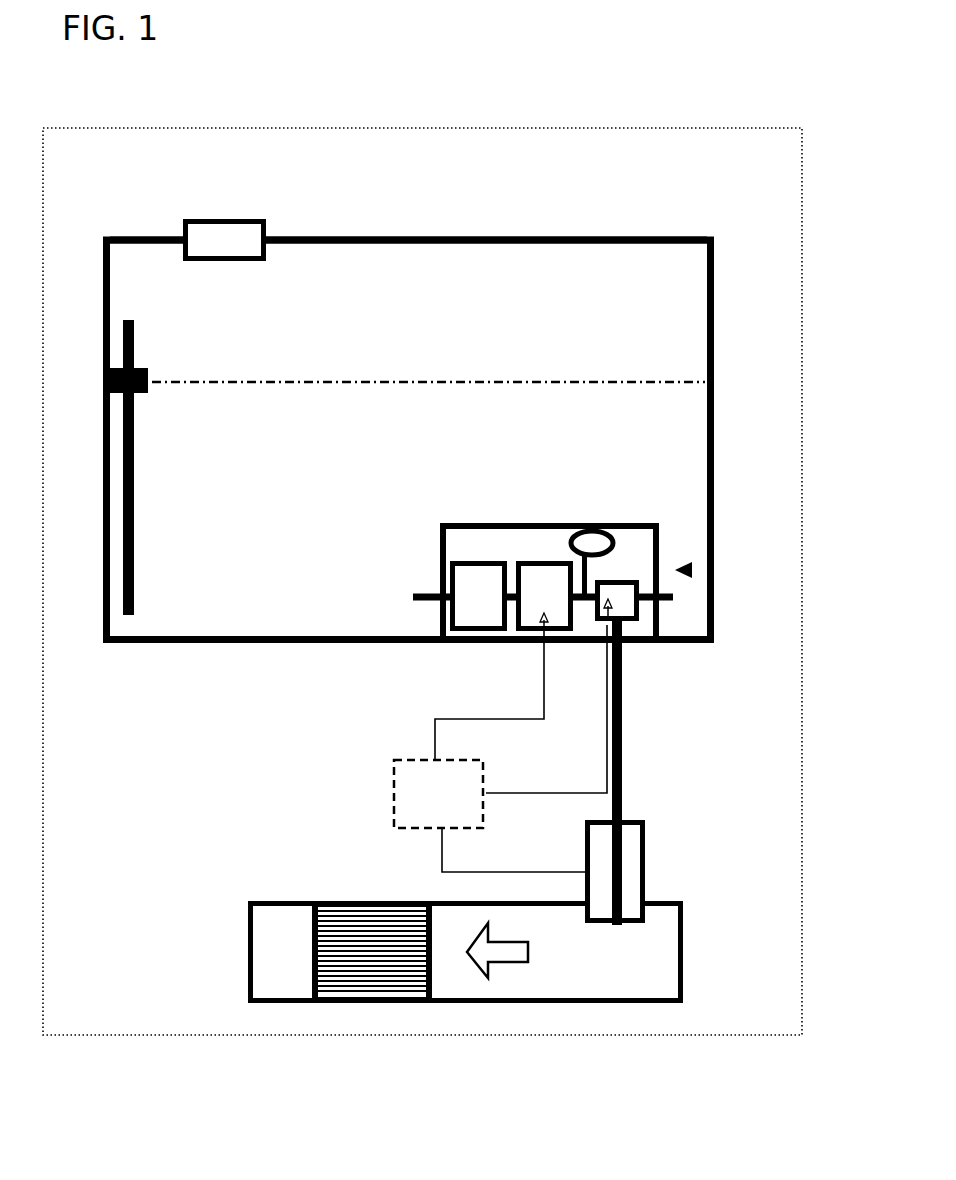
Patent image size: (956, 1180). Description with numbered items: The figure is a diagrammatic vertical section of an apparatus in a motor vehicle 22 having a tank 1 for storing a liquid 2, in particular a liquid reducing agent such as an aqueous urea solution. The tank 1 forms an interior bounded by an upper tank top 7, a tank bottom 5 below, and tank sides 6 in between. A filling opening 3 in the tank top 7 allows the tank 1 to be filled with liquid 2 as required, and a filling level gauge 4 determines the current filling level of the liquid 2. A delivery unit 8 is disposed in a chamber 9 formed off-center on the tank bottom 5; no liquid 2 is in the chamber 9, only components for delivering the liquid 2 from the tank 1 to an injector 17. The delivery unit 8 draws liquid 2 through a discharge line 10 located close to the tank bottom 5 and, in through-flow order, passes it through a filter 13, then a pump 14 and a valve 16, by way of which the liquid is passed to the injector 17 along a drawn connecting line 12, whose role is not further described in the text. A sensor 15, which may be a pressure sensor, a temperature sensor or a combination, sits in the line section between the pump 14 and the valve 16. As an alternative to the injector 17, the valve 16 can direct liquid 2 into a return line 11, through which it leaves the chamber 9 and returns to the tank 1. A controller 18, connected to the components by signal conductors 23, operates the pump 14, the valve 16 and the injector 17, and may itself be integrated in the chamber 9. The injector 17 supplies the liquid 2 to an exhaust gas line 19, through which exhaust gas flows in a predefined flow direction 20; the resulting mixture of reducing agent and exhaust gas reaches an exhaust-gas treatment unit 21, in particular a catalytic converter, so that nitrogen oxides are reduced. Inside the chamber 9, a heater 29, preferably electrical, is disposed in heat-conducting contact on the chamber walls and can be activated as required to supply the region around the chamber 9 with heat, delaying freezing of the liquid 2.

The tank 1 is at (546, 253).
The liquid 2 is at (317, 378).
The filling opening 3 is at (243, 222).
The filling level gauge 4 is at (153, 373).
The tank bottom 5 is at (150, 637).
The tank sides 6 is at (713, 432).
The tank top 7 is at (377, 237).
The delivery unit 8 is at (692, 570).
The chamber 9 is at (440, 520).
The discharge line 10 is at (413, 596).
The return line 11 is at (673, 596).
The delivery line 12 is at (622, 743).
The filter 13 is at (480, 575).
The pump 14 is at (537, 583).
The sensor 15 is at (588, 530).
The valve 16 is at (622, 597).
The injector 17 is at (633, 864).
The controller 18 is at (425, 795).
The exhaust gas line 19 is at (645, 967).
The flow direction 20 is at (507, 955).
The exhaust-gas treatment unit 21 is at (383, 980).
The motor vehicle 22 is at (648, 125).
The signal conductors 23 is at (440, 718).
The heater 29 is at (660, 565).